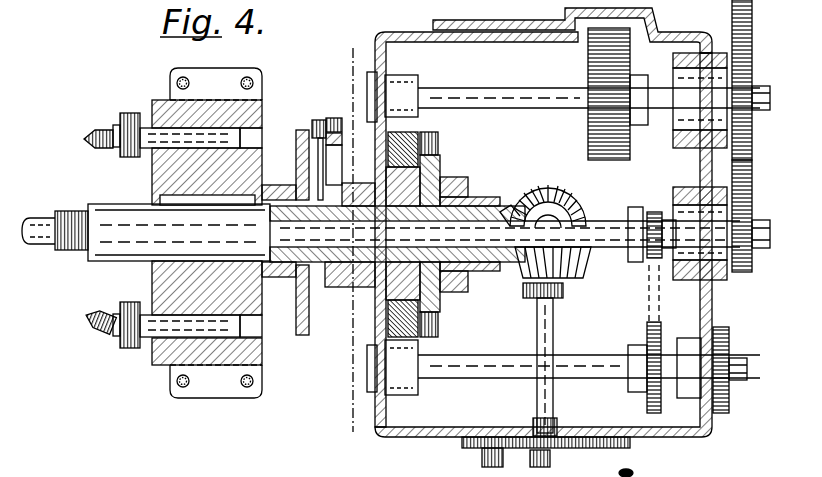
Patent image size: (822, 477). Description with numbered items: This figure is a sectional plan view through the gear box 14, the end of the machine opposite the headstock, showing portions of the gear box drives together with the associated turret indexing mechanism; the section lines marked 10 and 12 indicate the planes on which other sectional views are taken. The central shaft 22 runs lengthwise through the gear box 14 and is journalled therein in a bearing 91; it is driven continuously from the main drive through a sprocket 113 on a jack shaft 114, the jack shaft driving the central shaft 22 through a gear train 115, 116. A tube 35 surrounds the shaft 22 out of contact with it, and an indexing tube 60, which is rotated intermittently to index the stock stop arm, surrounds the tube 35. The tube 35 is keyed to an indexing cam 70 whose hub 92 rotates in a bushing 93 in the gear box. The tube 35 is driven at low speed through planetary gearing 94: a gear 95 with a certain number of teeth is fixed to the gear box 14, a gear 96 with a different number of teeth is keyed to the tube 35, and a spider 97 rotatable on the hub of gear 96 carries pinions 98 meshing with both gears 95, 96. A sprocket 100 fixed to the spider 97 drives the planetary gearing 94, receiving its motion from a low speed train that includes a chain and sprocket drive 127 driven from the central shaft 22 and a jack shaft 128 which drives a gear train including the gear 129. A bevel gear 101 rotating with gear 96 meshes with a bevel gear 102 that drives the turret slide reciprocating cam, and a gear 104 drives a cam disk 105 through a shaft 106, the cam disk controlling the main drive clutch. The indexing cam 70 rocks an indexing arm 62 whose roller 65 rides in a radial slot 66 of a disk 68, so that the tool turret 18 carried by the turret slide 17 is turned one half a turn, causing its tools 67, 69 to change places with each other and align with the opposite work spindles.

The section line 10- 10 is at (372, 406).
The section line 12- 12 is at (350, 63).
The gear box 14 is at (713, 307).
The turret slide 17 is at (170, 95).
The tool turret 18 is at (152, 348).
The central shaft 22 is at (42, 247).
The tube 35 is at (75, 252).
The indexing tube 60 is at (120, 262).
The indexing arm 62 is at (340, 162).
The roller 65 is at (317, 121).
The radial slot 66 is at (310, 162).
The tool 67 is at (99, 329).
The disk 68 is at (303, 130).
The tool 69 is at (102, 132).
The cam 70 is at (345, 287).
The bearing 91 is at (700, 166).
The hub 92 is at (360, 287).
The bushing 93 is at (353, 305).
The planetary gearing 94 is at (440, 169).
The gear 95 is at (386, 178).
The gear 96 is at (443, 182).
The spider 97 is at (440, 143).
The pinions 98 is at (414, 140).
The sprocket 100 is at (470, 293).
The bevel gear 101 is at (513, 196).
The bevel gear 102 is at (562, 196).
The gear 104 is at (590, 276).
The cam disk 105 is at (624, 448).
The shaft 106 is at (556, 332).
The sprocket 113 is at (588, 140).
The jack shaft 114 is at (522, 100).
The gear 115 is at (753, 140).
The gear 116 is at (753, 214).
The chain and sprocket drive 127 is at (648, 312).
The jack shaft 128 is at (521, 360).
The gear 129 is at (732, 339).